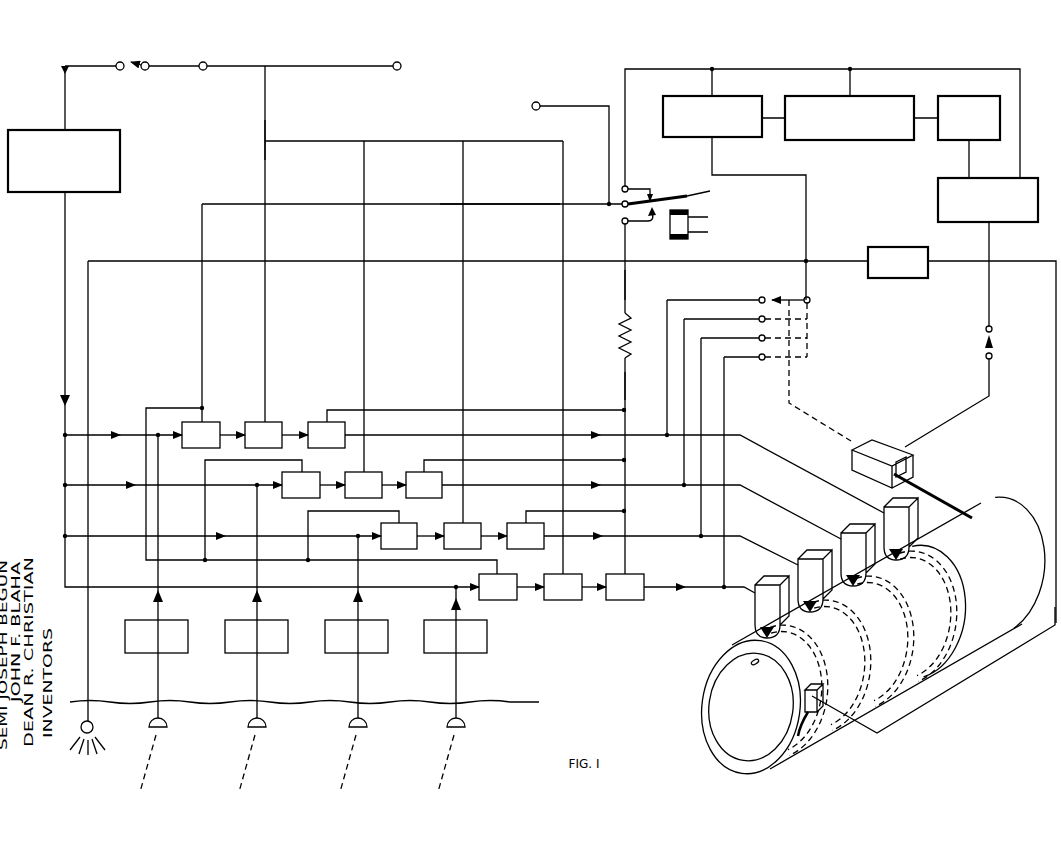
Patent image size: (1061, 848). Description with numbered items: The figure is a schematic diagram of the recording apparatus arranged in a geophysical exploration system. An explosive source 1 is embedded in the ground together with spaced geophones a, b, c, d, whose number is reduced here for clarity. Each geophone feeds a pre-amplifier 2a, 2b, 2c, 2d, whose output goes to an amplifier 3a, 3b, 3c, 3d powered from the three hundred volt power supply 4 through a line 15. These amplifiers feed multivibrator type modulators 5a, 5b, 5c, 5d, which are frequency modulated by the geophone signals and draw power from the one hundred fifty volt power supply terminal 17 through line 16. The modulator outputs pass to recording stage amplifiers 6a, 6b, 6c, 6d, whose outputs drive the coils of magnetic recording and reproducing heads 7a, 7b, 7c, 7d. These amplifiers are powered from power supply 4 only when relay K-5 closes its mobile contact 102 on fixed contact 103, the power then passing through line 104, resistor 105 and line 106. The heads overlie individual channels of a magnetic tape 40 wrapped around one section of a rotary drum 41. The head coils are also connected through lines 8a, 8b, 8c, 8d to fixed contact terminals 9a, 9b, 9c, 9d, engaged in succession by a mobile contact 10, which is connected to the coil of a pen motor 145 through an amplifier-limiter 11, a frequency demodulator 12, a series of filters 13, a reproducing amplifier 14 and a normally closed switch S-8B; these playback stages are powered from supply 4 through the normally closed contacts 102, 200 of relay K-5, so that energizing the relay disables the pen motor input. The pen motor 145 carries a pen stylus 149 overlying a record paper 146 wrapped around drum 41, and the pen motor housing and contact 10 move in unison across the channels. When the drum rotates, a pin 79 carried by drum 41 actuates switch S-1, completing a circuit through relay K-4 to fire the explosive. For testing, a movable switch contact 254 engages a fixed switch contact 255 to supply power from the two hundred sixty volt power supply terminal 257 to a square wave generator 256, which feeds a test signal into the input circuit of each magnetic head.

The explosive source 1 is at (93, 723).
The pre-amplifier 2a is at (170, 620).
The pre-amplifier 2b is at (270, 620).
The pre-amplifier 2c is at (368, 620).
The pre-amplifier 2d is at (447, 620).
The amplifier 3a is at (182, 424).
The amplifier 3b is at (282, 474).
The amplifier 3c is at (381, 527).
The amplifier 3d is at (479, 580).
The 300 volt D. C. power supply 4 is at (540, 101).
The multivibrator type modulator 5a is at (257, 422).
The multivibrator type modulator 5b is at (354, 472).
The multivibrator type modulator 5c is at (452, 523).
The multivibrator type modulator 5d is at (551, 574).
The recording stage amplifier 6a is at (318, 422).
The recording stage amplifier 6b is at (414, 472).
The recording stage amplifier 6c is at (515, 523).
The recording stage amplifier 6d is at (615, 574).
The magnetic recording and reproducing head 7a is at (884, 510).
The magnetic recording and reproducing head 7b is at (841, 535).
The magnetic recording and reproducing head 7c is at (798, 561).
The magnetic recording and reproducing head 7d is at (755, 586).
The line 8a is at (667, 352).
The line 8b is at (684, 479).
The line 8c is at (701, 528).
The line 8d is at (724, 401).
The fixed contact terminal 9a is at (759, 298).
The fixed contact terminal 9b is at (759, 317).
The fixed contact terminal 9c is at (759, 336).
The fixed contact terminal 9d is at (759, 355).
The mobile contact 10 is at (779, 297).
The amplifier-limiter 11 is at (690, 96).
The frequency demodulator 12 is at (830, 96).
The series of filters 13 is at (980, 96).
The reproducing amplifier 14 is at (938, 196).
The line 15 is at (498, 204).
The line 16 is at (265, 126).
The 150 volt power supply terminal 17 is at (395, 62).
The magnetic tape 40 is at (914, 682).
The rotary drum 41 is at (726, 747).
The pin 79 is at (753, 666).
The mobile contact 102 is at (678, 196).
The fixed contact 103 is at (639, 226).
The line 104 is at (625, 287).
The resistor 105 is at (619, 337).
The line 106 is at (625, 387).
The pen motor 145 is at (870, 444).
The record paper 146 is at (1000, 507).
The pen stylus 149 is at (930, 488).
The fixed contact 200 is at (652, 197).
The movable switch contact 254 is at (138, 61).
The fixed switch contact 255 is at (117, 63).
The square wave generator 256 is at (121, 163).
The 260 volt power supply terminal 257 is at (207, 62).
The switch S-1 is at (823, 692).
The normally closed switch S-8B is at (993, 342).
The relay K-4 is at (898, 262).
The relay K-5 is at (689, 233).
The geophone a is at (164, 722).
The geophone b is at (264, 722).
The geophone c is at (365, 722).
The geophone d is at (463, 722).